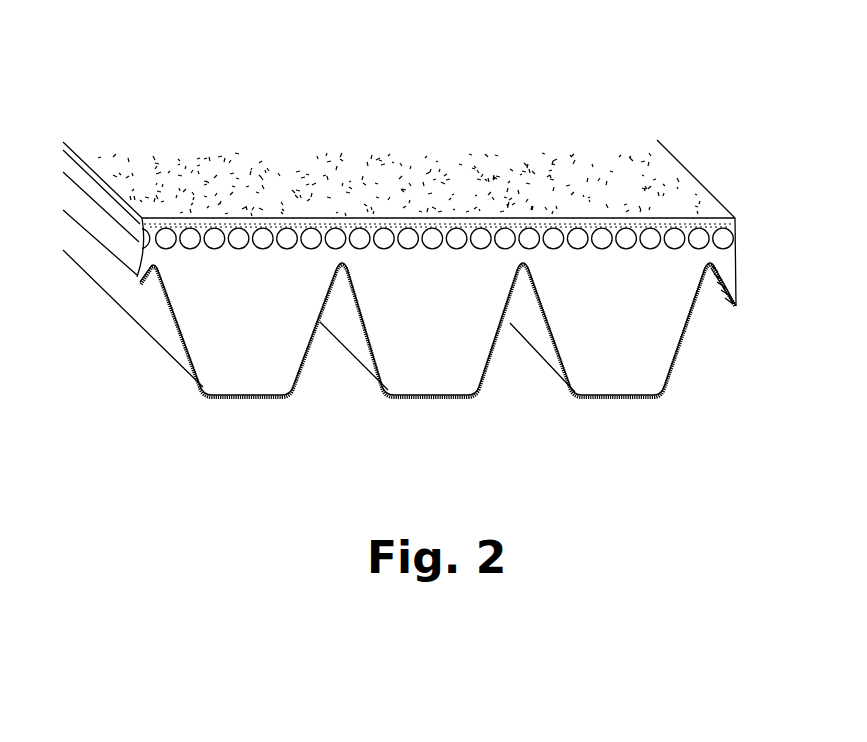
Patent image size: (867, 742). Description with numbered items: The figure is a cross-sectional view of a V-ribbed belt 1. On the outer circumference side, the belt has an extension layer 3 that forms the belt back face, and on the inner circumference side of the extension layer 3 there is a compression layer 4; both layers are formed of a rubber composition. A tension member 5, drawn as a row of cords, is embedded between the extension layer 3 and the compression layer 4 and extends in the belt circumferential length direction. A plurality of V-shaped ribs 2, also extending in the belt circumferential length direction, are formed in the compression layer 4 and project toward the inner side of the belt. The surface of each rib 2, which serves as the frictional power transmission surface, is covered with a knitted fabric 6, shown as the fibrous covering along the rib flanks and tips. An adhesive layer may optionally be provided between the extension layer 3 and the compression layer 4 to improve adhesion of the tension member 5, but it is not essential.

The V-ribbed belt 1 is at (297, 79).
The V-shaped rib 2 is at (228, 377).
The extension layer 3 is at (745, 219).
The compression layer 4 is at (745, 250).
The tension member 5 is at (693, 218).
The knitted fabric 6 is at (177, 337).